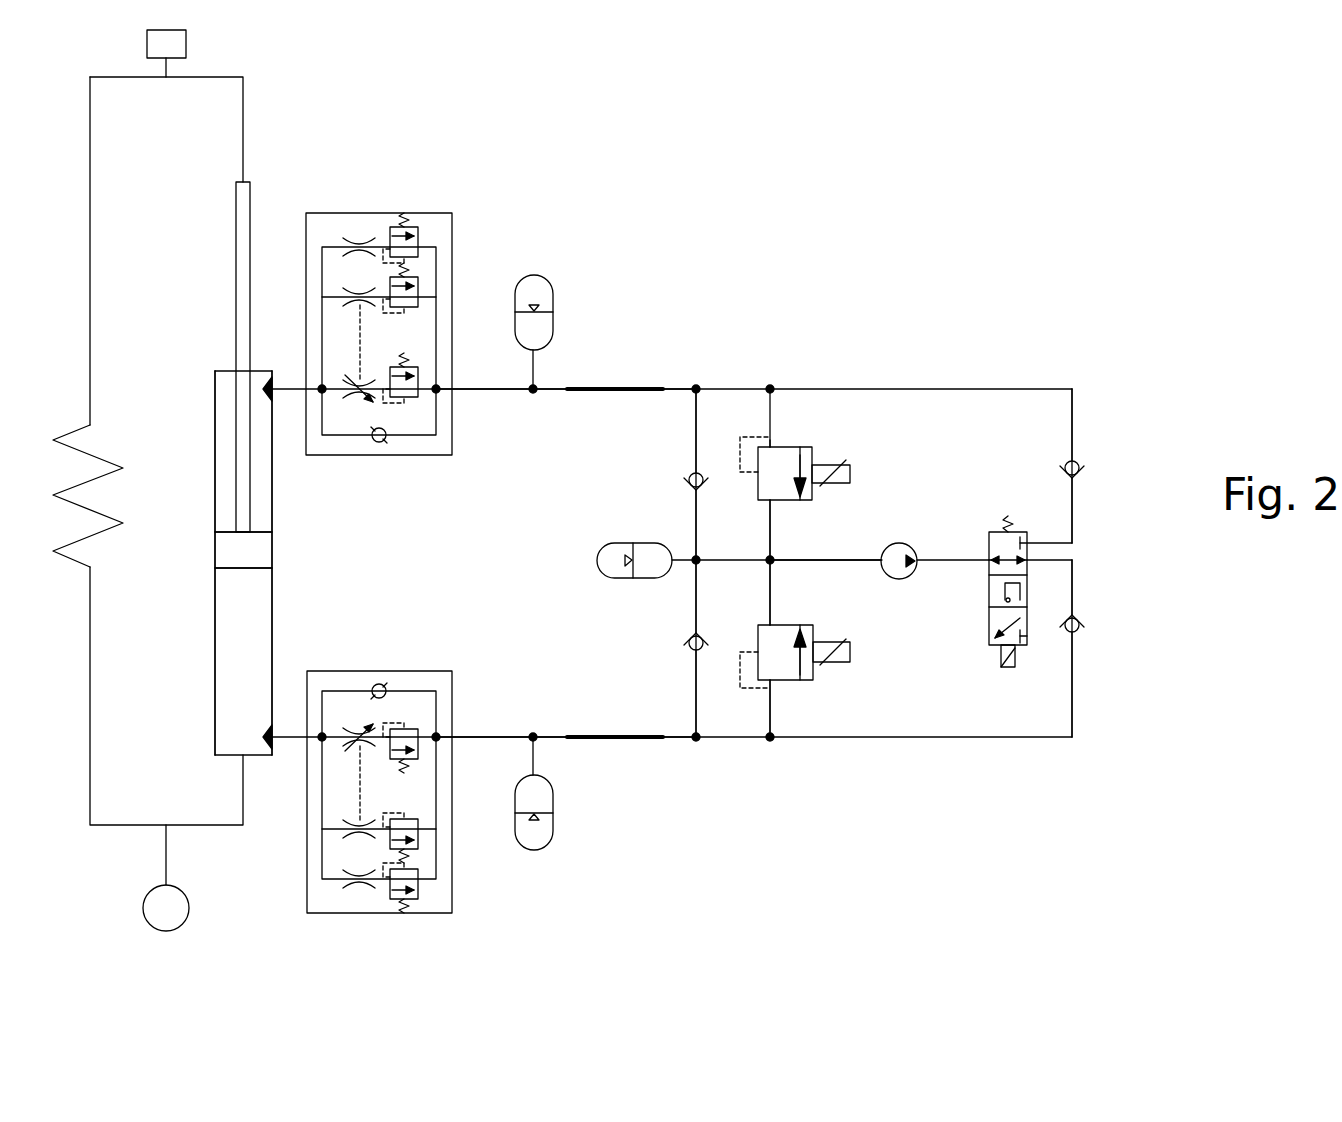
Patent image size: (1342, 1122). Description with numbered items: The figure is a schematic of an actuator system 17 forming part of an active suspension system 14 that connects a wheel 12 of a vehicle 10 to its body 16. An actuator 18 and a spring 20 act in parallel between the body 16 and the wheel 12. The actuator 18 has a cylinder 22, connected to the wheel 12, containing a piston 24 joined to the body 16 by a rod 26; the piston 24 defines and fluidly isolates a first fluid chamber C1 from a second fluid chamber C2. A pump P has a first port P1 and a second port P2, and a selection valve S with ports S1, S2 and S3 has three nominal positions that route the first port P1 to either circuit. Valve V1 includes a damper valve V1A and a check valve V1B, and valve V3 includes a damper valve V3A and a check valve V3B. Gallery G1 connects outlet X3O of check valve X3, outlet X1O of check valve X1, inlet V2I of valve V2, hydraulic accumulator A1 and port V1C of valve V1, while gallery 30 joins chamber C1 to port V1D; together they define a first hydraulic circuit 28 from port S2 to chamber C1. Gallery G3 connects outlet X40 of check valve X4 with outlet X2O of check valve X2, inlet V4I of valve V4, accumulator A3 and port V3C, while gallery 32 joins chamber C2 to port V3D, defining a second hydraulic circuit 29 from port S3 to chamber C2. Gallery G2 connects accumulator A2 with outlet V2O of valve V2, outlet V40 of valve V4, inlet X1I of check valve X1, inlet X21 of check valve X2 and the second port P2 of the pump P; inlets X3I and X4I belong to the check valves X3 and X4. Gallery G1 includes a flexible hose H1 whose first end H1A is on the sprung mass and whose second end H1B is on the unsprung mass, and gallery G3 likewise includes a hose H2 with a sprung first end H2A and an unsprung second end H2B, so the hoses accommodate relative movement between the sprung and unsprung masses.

The vehicle 10 is at (737, 160).
The wheel 12 is at (147, 918).
The active suspension system 14 is at (426, 158).
The body 16 is at (186, 44).
The actuator system 17 is at (834, 235).
The actuator 18 is at (300, 547).
The spring 20 is at (103, 462).
The cylinder 22 is at (272, 618).
The piston 24 is at (228, 551).
The rod 26 is at (240, 242).
The first hydraulic circuit 28 is at (910, 388).
The second hydraulic circuit 29 is at (910, 741).
The gallery 30 is at (290, 385).
The gallery 32 is at (290, 742).
The hydraulic accumulator A1 is at (548, 278).
The hydraulic accumulator A2 is at (605, 552).
The hydraulic accumulator A3 is at (550, 848).
The first fluid chamber C1 is at (228, 402).
The second fluid chamber C2 is at (228, 645).
The hydraulic gallery G1 is at (822, 388).
The hydraulic gallery G2 is at (818, 570).
The hydraulic gallery G3 is at (822, 741).
The hose H1 is at (615, 385).
The first end of hose H1 H1A is at (663, 385).
The second end of hose H1 H1B is at (572, 393).
The hose H2 is at (612, 741).
The first end of hose H2 H2A is at (663, 741).
The second end of hose H2 H2B is at (572, 733).
The pump P is at (899, 543).
The first port P1 is at (920, 560).
The second port P2 is at (881, 561).
The selection valve S is at (989, 607).
The port S1 is at (989, 561).
The port S2 is at (1028, 542).
The port S3 is at (1028, 563).
The valve V1 is at (393, 213).
The damper valve V1A is at (418, 290).
The check valve V1B is at (381, 444).
The port V1C is at (445, 398).
The port V1D is at (318, 392).
The valve V2 is at (815, 450).
The inlet V2I is at (771, 446).
The outlet V2O is at (768, 502).
The valve V3 is at (307, 900).
The damper valve V3A is at (418, 836).
The check valve V3B is at (381, 683).
The port V3C is at (445, 728).
The port V3D is at (318, 734).
The valve V4 is at (815, 681).
The outlet V40 is at (758, 630).
The inlet V4I is at (771, 683).
The check valve X1 is at (688, 481).
The outlet X1O is at (692, 473).
The inlet X1I is at (690, 491).
The check valve X2 is at (688, 645).
The inlet X21 is at (690, 637).
The outlet X2O is at (690, 652).
The check valve X3 is at (1081, 467).
The outlet X3O is at (1076, 461).
The inlet X3I is at (1077, 477).
The check valve X4 is at (1081, 627).
The inlet X4I is at (1077, 619).
The outlet X40 is at (1077, 634).